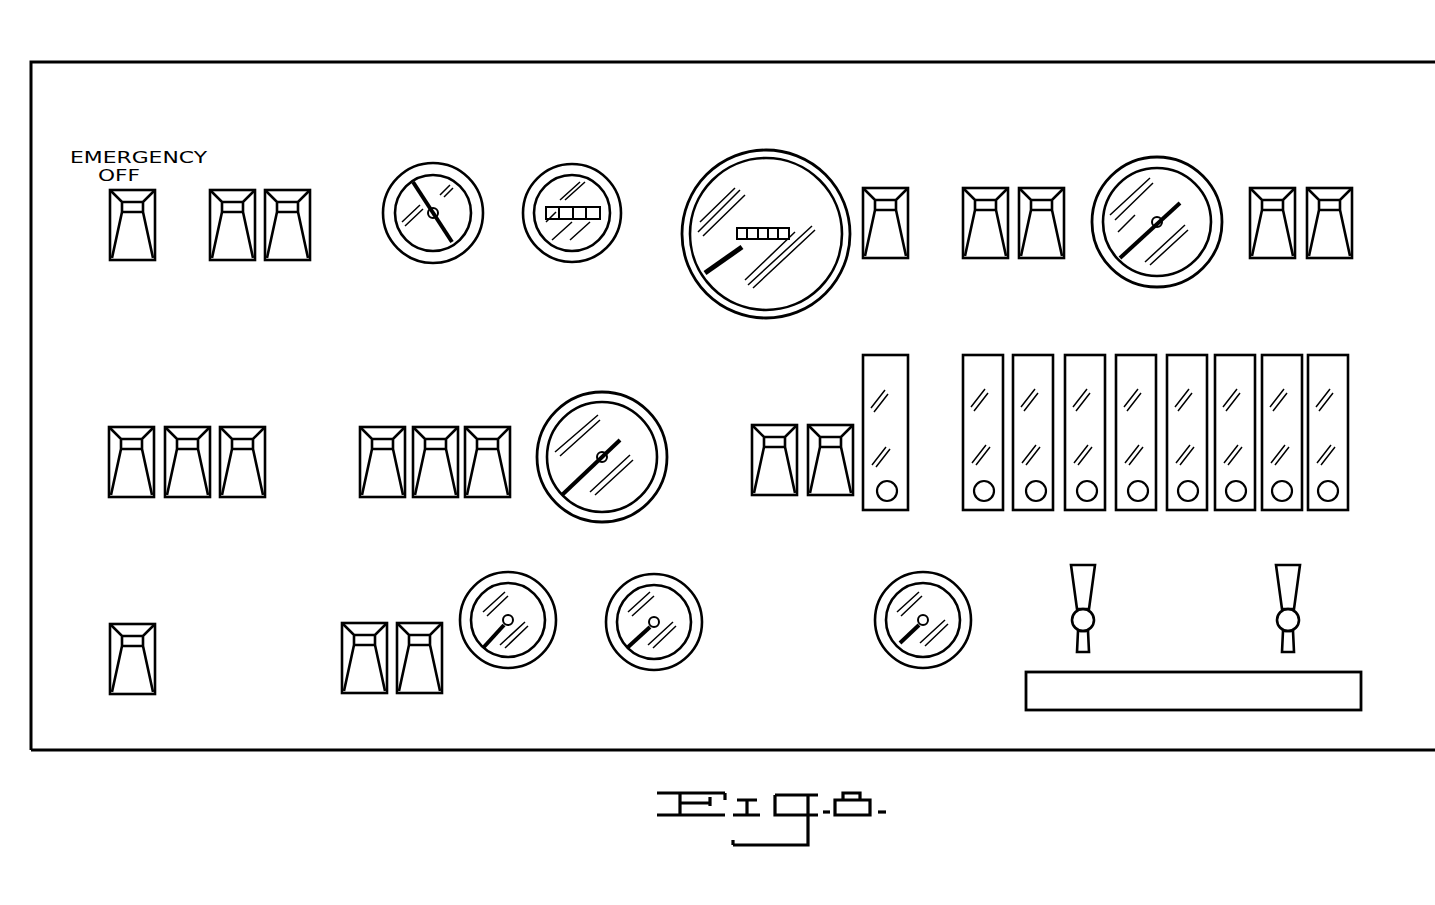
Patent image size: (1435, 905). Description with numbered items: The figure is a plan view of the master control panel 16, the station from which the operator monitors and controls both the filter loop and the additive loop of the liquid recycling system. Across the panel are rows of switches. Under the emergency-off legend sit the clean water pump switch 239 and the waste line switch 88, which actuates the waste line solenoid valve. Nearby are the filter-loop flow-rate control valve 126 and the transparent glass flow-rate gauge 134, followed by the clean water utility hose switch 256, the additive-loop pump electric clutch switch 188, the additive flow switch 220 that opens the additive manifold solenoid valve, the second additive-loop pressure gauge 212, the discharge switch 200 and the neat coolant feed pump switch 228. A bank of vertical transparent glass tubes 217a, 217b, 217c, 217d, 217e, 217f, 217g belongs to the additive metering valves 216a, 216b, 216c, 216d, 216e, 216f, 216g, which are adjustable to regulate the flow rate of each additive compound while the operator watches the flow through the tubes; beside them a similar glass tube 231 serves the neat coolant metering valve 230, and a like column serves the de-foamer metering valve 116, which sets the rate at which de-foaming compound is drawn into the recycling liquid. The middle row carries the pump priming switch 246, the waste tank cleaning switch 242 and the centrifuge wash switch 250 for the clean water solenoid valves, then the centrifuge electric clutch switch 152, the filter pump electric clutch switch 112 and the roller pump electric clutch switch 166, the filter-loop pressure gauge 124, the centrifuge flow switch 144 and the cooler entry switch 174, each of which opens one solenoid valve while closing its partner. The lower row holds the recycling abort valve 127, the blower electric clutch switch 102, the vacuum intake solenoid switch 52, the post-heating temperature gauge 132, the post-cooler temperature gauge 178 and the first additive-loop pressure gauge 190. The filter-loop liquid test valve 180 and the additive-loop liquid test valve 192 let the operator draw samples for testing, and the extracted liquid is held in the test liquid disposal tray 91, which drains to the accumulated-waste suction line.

The master control panel 16 is at (768, 40).
The clean water pump switch 239 is at (229, 247).
The waste line switch 88 is at (287, 248).
The filter-loop flow-rate control valve 126 is at (422, 240).
The flow-rate gauge 134 is at (565, 240).
The clean water utility hose switch 256 is at (885, 245).
The additive-loop pump electric clutch switch 188 is at (985, 245).
The additive flow switch 220 is at (1037, 245).
The second additive-loop pressure gauge 212 is at (1170, 182).
The discharge switch 200 is at (1270, 245).
The neat coolant feed pump switch 228 is at (1327, 245).
The transparent glass tube 217a is at (975, 355).
The transparent glass tube 217b is at (1022, 355).
The transparent glass tube 217c is at (1075, 355).
The transparent glass tube 217d is at (1133, 355).
The transparent glass tube 217e is at (1178, 355).
The transparent glass tube 217f is at (1228, 355).
The transparent glass tube 217g is at (1278, 355).
The transparent glass tube 231 is at (1330, 355).
The de-foamer metering valve 116 is at (887, 501).
The additive metering valve 216a is at (977, 501).
The additive metering valve 216b is at (1036, 501).
The additive metering valve 216c is at (1087, 501).
The additive metering valve 216d is at (1140, 501).
The additive metering valve 216e is at (1190, 501).
The additive metering valve 216f is at (1240, 501).
The additive metering valve 216g is at (1285, 501).
The neat coolant metering valve 230 is at (1328, 501).
The pump priming switch 246 is at (130, 487).
The waste tank cleaning switch 242 is at (186, 487).
The centrifuge wash switch 250 is at (243, 487).
The centrifuge electric clutch switch 152 is at (380, 487).
The filter pump electric clutch switch 112 is at (433, 487).
The roller pump electric clutch switch 166 is at (490, 487).
The filter-loop pressure gauge 124 is at (612, 495).
The centrifuge flow switch 144 is at (772, 483).
The cooler entry switch 174 is at (828, 483).
The recycling abort valve 127 is at (133, 683).
The blower electric clutch switch 102 is at (362, 682).
The vacuum intake solenoid switch 52 is at (418, 683).
The post-heating temperature gauge 132 is at (515, 648).
The post-cooler temperature gauge 178 is at (662, 648).
The first additive-loop pressure gauge 190 is at (913, 645).
The filter-loop liquid test valve 180 is at (1072, 620).
The additive-loop liquid test valve 192 is at (1277, 620).
The test liquid disposal tray 91 is at (1025, 695).